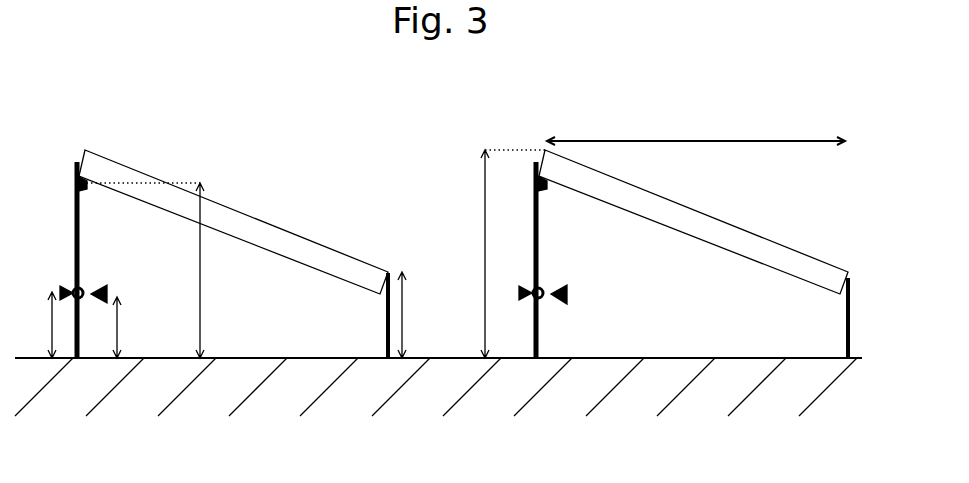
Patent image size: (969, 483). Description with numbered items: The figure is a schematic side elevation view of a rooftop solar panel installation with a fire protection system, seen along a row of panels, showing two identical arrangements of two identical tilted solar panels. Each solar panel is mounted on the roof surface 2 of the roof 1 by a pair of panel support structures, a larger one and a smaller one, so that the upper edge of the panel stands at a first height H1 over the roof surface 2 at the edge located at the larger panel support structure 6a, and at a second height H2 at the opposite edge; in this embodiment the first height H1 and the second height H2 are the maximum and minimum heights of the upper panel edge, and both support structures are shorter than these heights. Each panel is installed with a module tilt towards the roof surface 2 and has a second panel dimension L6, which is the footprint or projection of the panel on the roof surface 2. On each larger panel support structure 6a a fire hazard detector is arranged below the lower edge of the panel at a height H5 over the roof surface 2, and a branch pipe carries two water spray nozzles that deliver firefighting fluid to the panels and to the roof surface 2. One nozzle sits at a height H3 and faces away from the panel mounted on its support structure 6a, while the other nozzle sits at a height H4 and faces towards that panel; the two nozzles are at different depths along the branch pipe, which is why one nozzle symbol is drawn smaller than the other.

The roof 1 is at (442, 387).
The roof surface 2 is at (255, 357).
The panel support structure 6a is at (540, 265).
The first height of solar panel H1 is at (485, 208).
The second height of solar panel H2 is at (404, 321).
The height H3 is at (50, 330).
The height H4 is at (119, 330).
The height H5 is at (200, 259).
The second panel dimension L6 is at (662, 141).